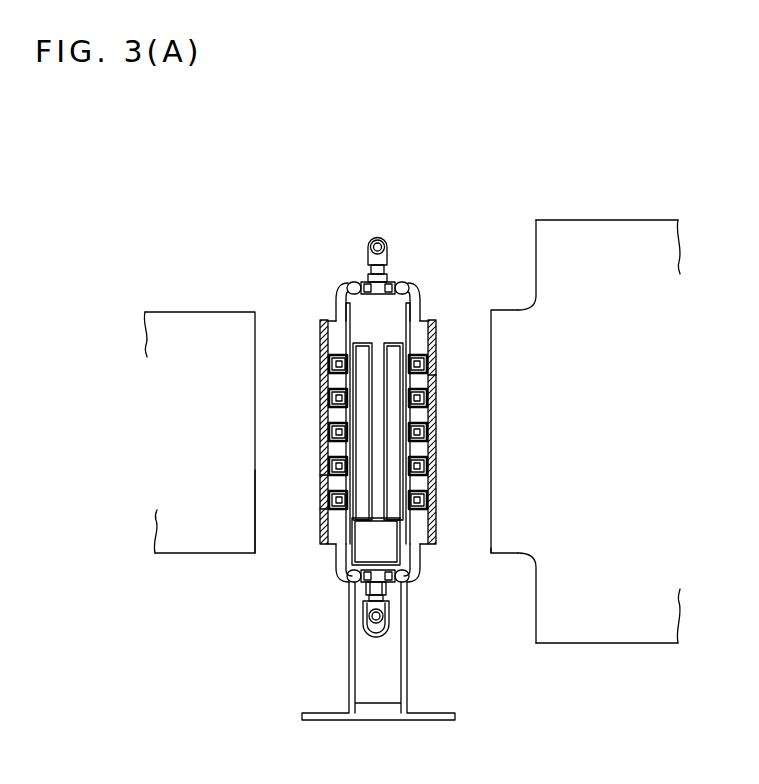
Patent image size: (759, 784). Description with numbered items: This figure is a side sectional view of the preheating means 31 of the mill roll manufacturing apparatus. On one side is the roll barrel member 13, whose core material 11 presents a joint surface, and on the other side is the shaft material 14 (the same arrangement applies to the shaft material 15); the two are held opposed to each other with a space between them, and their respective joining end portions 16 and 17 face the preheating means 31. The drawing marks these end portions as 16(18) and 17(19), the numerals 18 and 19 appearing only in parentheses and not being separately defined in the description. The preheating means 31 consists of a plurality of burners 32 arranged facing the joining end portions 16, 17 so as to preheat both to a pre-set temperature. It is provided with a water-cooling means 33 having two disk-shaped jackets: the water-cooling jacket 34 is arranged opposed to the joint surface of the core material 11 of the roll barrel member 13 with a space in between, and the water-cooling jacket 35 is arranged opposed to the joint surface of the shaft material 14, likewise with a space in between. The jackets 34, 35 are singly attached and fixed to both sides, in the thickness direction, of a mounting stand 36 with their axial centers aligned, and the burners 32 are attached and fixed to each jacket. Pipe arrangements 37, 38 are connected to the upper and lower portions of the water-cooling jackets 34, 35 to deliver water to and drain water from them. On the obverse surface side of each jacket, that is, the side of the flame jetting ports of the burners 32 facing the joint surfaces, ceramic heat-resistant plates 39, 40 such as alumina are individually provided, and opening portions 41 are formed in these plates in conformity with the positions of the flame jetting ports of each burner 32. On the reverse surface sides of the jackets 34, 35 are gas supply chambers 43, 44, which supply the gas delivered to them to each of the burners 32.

The core material 11 is at (512, 307).
The roll barrel member 13 is at (609, 216).
The shaft material 14 is at (197, 381).
The shaft material 15 is at (199, 308).
The joining end portion 16 is at (563, 654).
The joining end portion 17 is at (204, 580).
The surface 18 is at (493, 556).
The surface 19 is at (256, 474).
The preheating means 31 is at (439, 353).
The burners 32 is at (333, 399).
The water-cooling means 33 is at (352, 246).
The water-cooling jacket 34 is at (376, 358).
The water-cooling jacket 35 is at (333, 325).
The mounting stand 36 is at (347, 622).
The pipe arrangement 37 is at (382, 236).
The pipe arrangement 38 is at (384, 636).
The heat-resistant plate 39 is at (436, 546).
The heat-resistant plate 40 is at (321, 544).
The opening portions 41 is at (438, 366).
The gas supply chamber 43 is at (420, 327).
The gas supply chamber 44 is at (336, 327).